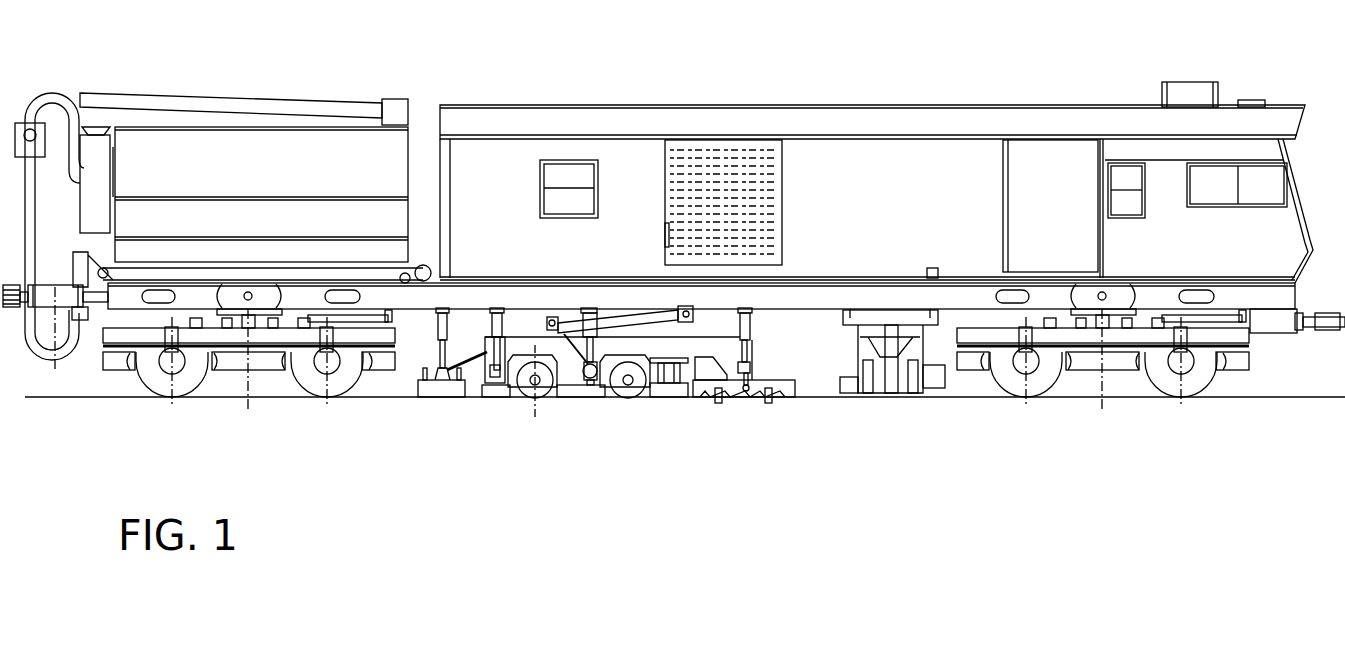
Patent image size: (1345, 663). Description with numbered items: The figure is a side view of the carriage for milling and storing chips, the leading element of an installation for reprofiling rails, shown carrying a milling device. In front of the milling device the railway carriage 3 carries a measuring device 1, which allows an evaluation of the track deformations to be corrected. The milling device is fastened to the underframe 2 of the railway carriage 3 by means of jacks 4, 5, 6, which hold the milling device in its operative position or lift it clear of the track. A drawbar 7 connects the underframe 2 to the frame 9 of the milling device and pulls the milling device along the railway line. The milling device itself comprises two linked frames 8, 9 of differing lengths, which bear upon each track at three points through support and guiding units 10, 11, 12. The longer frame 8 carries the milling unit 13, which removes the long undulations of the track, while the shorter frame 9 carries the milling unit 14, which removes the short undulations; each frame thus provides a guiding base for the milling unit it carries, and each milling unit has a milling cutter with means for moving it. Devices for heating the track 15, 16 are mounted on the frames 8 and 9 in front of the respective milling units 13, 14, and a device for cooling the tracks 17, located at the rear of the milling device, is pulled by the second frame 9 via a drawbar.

The measuring device 1 is at (910, 395).
The underframe 2 is at (817, 298).
The railway carriage 3 is at (932, 172).
The jack 4 is at (748, 322).
The jack 5 is at (590, 355).
The jack 6 is at (497, 300).
The drawbar 7 is at (637, 312).
The frame 8 is at (703, 345).
The frame 9 is at (473, 395).
The support and guiding unit 10 is at (768, 400).
The support and guiding unit 11 is at (593, 400).
The support and guiding unit 12 is at (510, 400).
The milling unit 13 is at (637, 400).
The milling unit 14 is at (543, 398).
The track heating device 15 is at (677, 402).
The track heating device 16 is at (570, 400).
The track cooling device 17 is at (440, 398).